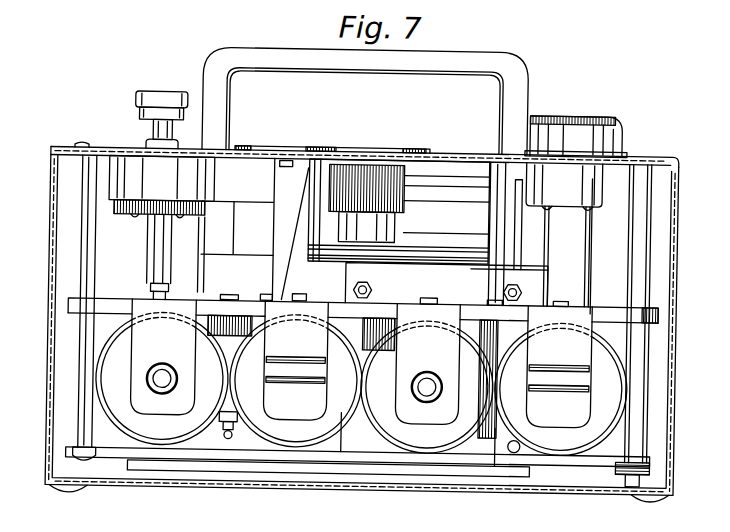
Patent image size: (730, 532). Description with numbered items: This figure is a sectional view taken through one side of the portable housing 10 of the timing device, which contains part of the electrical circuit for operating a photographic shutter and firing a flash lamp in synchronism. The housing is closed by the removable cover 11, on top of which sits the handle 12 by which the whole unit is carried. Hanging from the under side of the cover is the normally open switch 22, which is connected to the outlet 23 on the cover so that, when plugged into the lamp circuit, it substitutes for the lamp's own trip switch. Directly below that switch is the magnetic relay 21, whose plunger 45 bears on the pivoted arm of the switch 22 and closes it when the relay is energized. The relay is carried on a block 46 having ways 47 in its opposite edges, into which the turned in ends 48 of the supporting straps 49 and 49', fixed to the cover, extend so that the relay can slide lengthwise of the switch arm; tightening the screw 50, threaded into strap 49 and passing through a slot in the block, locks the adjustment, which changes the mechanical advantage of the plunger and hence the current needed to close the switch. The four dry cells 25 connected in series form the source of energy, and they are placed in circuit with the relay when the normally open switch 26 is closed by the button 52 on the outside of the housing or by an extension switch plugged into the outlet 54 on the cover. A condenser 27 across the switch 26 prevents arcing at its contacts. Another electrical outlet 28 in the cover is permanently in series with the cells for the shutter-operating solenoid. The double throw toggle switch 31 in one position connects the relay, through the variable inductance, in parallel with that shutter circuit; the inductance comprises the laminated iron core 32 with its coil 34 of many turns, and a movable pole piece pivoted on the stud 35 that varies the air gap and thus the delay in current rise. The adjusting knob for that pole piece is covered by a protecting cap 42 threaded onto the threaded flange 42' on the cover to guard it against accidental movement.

The portable housing 10 is at (48, 336).
The removable cover 11 is at (48, 158).
The handle 12 is at (495, 69).
The magnetic relay 21 is at (222, 335).
The normally open switch 22 is at (262, 167).
The outlet 23 is at (366, 150).
The dry cells 25 is at (277, 431).
The normally open switch 26 is at (147, 233).
The condenser 27 is at (429, 214).
The electrical outlet 28 is at (500, 127).
The double throw toggle switch 31 is at (446, 285).
The laminated iron core 32 is at (473, 450).
The coil 34 is at (365, 432).
The stud 35 is at (305, 295).
The protecting cap 42 is at (598, 154).
The threaded flange 42' is at (611, 144).
The plunger 45 is at (238, 230).
The block 46 is at (243, 348).
The ways 47 is at (263, 305).
The turned in ends 48 is at (153, 285).
The supporting strap 49 is at (296, 146).
The supporting strap 49' is at (227, 230).
The screw 50 is at (150, 262).
The button 52 is at (143, 95).
The outlet 54 is at (82, 147).